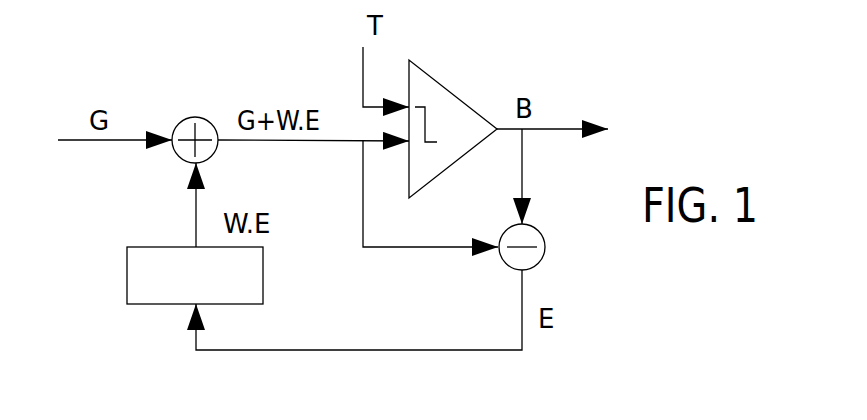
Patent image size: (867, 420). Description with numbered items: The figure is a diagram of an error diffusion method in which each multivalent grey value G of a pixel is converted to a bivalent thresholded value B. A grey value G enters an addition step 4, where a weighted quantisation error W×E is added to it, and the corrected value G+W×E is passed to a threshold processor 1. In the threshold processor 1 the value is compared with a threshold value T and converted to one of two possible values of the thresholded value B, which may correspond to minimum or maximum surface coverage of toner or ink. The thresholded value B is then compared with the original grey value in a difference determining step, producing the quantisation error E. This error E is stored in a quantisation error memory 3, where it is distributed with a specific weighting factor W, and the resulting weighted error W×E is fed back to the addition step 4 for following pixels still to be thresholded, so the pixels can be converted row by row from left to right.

The threshold processor 1 is at (455, 96).
The quantisation error memory 3 is at (263, 297).
The addition step 4 is at (200, 116).